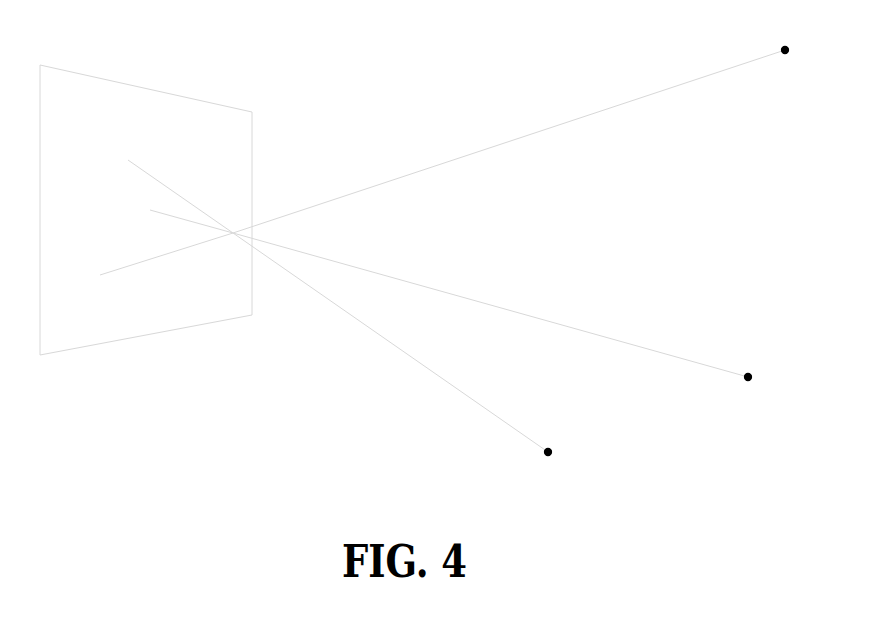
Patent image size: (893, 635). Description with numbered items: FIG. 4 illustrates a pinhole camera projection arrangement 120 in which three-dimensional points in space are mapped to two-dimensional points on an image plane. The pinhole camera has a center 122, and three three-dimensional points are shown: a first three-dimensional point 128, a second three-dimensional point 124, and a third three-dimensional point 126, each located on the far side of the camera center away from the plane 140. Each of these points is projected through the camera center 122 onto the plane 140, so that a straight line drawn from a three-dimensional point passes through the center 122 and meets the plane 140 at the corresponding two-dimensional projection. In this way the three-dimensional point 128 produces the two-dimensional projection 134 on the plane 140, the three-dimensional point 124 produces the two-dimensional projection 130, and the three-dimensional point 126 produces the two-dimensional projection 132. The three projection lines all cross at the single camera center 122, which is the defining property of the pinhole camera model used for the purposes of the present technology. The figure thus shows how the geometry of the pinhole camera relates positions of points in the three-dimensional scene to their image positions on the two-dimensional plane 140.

The camera projection model 120 is at (175, 512).
The center 122 is at (232, 230).
The 3-D point 124 is at (541, 458).
The 3-D point 126 is at (744, 385).
The 3-D point 128 is at (779, 44).
The 2-D projection 130 is at (128, 123).
The 2-D projection 132 is at (142, 200).
The 2-D projection 134 is at (88, 293).
The plane 140 is at (59, 77).